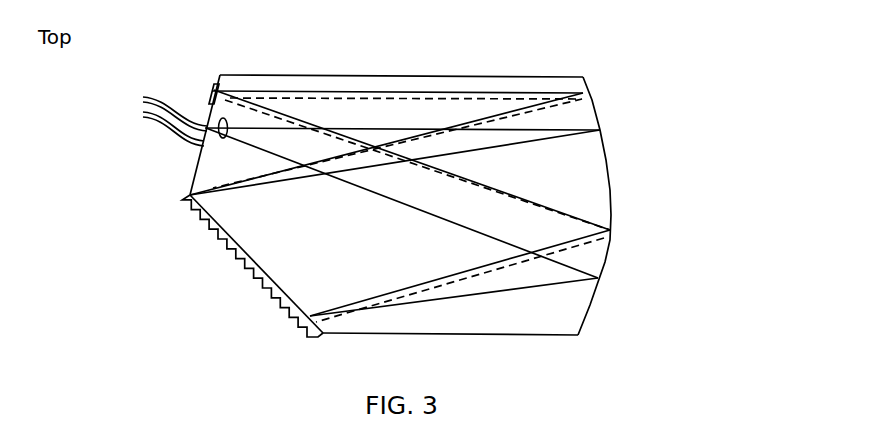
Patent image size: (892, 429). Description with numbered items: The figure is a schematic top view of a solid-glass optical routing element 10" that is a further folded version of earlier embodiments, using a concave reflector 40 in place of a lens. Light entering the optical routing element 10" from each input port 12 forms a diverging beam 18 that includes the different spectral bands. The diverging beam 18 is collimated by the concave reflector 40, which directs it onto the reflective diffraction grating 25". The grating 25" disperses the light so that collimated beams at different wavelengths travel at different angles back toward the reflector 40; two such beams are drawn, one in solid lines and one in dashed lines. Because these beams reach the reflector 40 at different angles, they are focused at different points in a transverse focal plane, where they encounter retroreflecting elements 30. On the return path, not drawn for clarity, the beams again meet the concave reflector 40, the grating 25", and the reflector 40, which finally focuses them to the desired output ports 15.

The retroreflecting elements 30 is at (212, 92).
The input port 12 is at (143, 104).
The output ports 15 is at (163, 122).
The diverging beam 18 is at (219, 138).
The concave reflector 40 is at (609, 165).
The reflective diffraction grating 25 is at (215, 246).
The optical routing element 10 is at (226, 289).